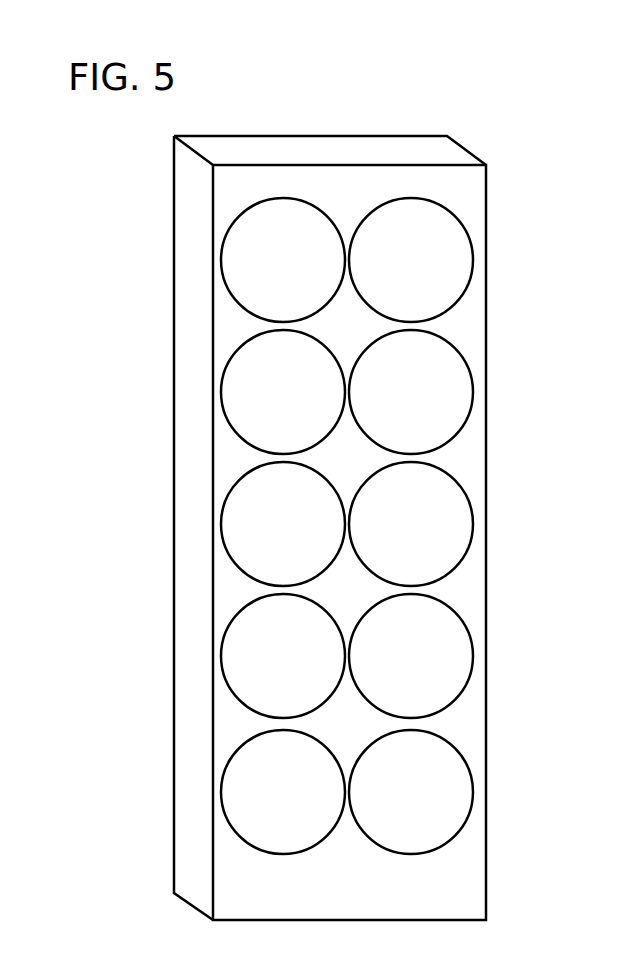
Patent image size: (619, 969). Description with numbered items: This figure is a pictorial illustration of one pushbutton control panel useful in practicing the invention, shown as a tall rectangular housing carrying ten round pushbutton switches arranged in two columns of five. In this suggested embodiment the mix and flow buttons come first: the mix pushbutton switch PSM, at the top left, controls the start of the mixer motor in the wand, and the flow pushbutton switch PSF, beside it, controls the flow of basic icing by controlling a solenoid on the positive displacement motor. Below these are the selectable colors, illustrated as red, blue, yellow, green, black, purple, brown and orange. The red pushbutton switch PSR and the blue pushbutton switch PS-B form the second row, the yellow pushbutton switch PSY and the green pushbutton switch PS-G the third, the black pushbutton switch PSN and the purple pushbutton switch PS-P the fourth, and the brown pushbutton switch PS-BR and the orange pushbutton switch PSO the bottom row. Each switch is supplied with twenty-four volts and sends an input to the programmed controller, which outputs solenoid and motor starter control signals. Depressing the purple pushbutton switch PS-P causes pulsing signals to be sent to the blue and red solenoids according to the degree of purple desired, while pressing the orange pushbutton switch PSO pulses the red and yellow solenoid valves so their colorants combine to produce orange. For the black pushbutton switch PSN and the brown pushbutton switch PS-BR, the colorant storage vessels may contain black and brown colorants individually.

The mix pushbutton switch PSM is at (225, 246).
The flow pushbutton switch PSF is at (469, 246).
The red pushbutton switch PSR is at (230, 366).
The blue pushbutton switch PS-B is at (466, 366).
The yellow pushbutton switch PSY is at (228, 500).
The green pushbutton switch PS-G is at (467, 508).
The black pushbutton switch PSN is at (230, 632).
The purple pushbutton switch PS-P is at (467, 632).
The brown pushbutton switch PS-BR is at (230, 776).
The orange pushbutton switch PSO is at (467, 778).